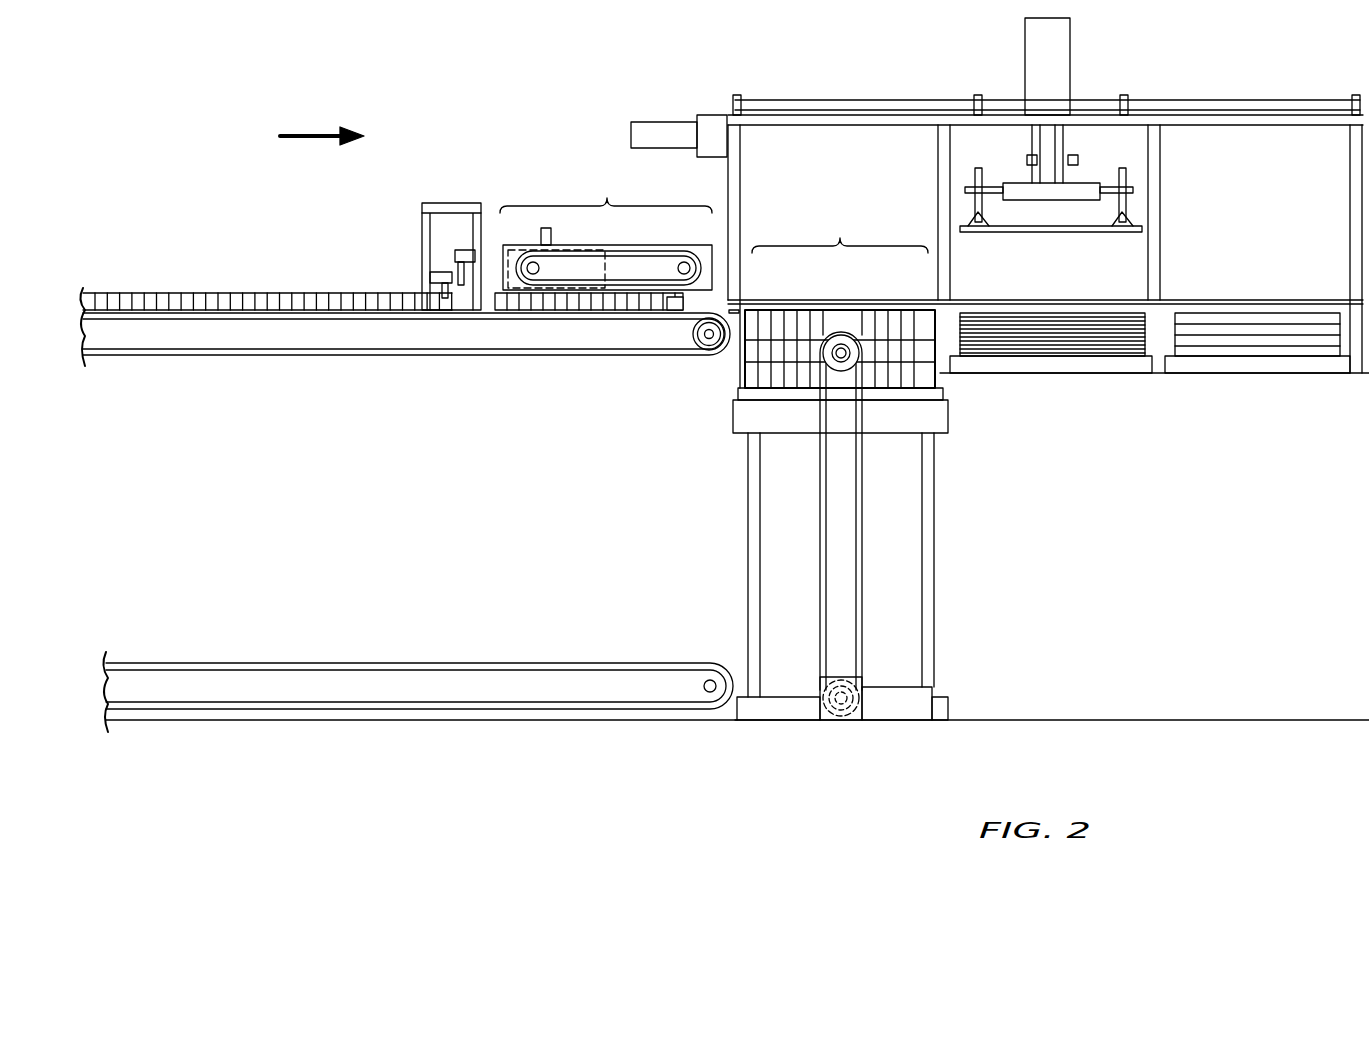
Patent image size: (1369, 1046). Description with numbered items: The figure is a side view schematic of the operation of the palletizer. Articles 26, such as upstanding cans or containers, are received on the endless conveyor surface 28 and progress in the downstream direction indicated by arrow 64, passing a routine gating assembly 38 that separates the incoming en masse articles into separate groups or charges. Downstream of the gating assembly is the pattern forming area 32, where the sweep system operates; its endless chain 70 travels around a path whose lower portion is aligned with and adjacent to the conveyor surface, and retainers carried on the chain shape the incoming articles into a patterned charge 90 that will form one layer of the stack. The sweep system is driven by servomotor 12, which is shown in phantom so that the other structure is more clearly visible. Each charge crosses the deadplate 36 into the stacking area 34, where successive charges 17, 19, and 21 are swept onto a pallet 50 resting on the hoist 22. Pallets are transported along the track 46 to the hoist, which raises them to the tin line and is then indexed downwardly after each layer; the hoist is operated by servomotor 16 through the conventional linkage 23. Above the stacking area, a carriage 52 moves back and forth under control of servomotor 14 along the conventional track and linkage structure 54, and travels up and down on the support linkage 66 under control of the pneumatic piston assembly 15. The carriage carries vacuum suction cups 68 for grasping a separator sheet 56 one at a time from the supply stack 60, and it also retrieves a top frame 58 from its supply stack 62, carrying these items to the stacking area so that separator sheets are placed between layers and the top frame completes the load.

The servomotor 12 is at (590, 270).
The servomotor 14 is at (663, 133).
The pneumatic piston assembly 15 is at (1026, 53).
The servomotor 16 is at (905, 697).
The charge of articles 17 is at (929, 373).
The charge of articles 19 is at (928, 352).
The charge of articles 21 is at (907, 330).
The hoist 22 is at (936, 417).
The linkage 23 is at (862, 586).
The articles 26 is at (332, 299).
The endless conveyor surface 28 is at (514, 324).
The pattern forming area 32 is at (606, 223).
The stacking area 34 is at (840, 238).
The deadplate 36 is at (735, 348).
The gating assembly 38 is at (460, 203).
The track 46 is at (526, 670).
The pallet 50 is at (803, 396).
The carriage 52 is at (1126, 216).
The track and linkage structure 54 is at (1256, 118).
The separator sheet 56 is at (1076, 232).
The top frame 58 is at (1252, 320).
The separator sheet supply stack 60 is at (1094, 346).
The top frame supply stack 62 is at (1290, 346).
The arrow 64 is at (316, 136).
The support linkage 66 is at (1070, 132).
The vacuum suction cups 68 is at (1121, 222).
The endless chain 70 is at (660, 255).
The charge 90 is at (596, 303).